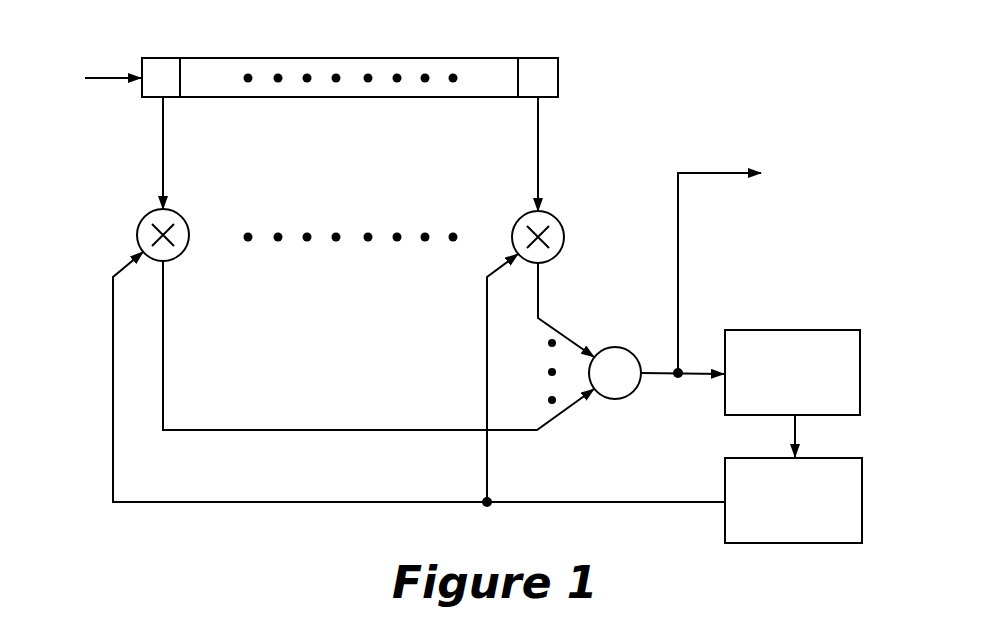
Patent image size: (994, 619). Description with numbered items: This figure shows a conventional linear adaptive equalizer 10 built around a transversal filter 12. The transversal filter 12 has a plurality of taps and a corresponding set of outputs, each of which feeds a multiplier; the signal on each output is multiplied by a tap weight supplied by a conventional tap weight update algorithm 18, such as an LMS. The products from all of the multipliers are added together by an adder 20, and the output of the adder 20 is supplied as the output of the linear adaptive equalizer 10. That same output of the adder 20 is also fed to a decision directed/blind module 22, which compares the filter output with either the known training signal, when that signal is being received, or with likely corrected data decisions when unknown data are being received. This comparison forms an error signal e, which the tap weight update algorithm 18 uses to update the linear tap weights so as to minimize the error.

The linear adaptive equalizer 10 is at (656, 58).
The transversal filter 12 is at (530, 58).
The tap weight update algorithm 18 is at (836, 458).
The adder 20 is at (629, 349).
The decision directed/blind module 22 is at (836, 330).